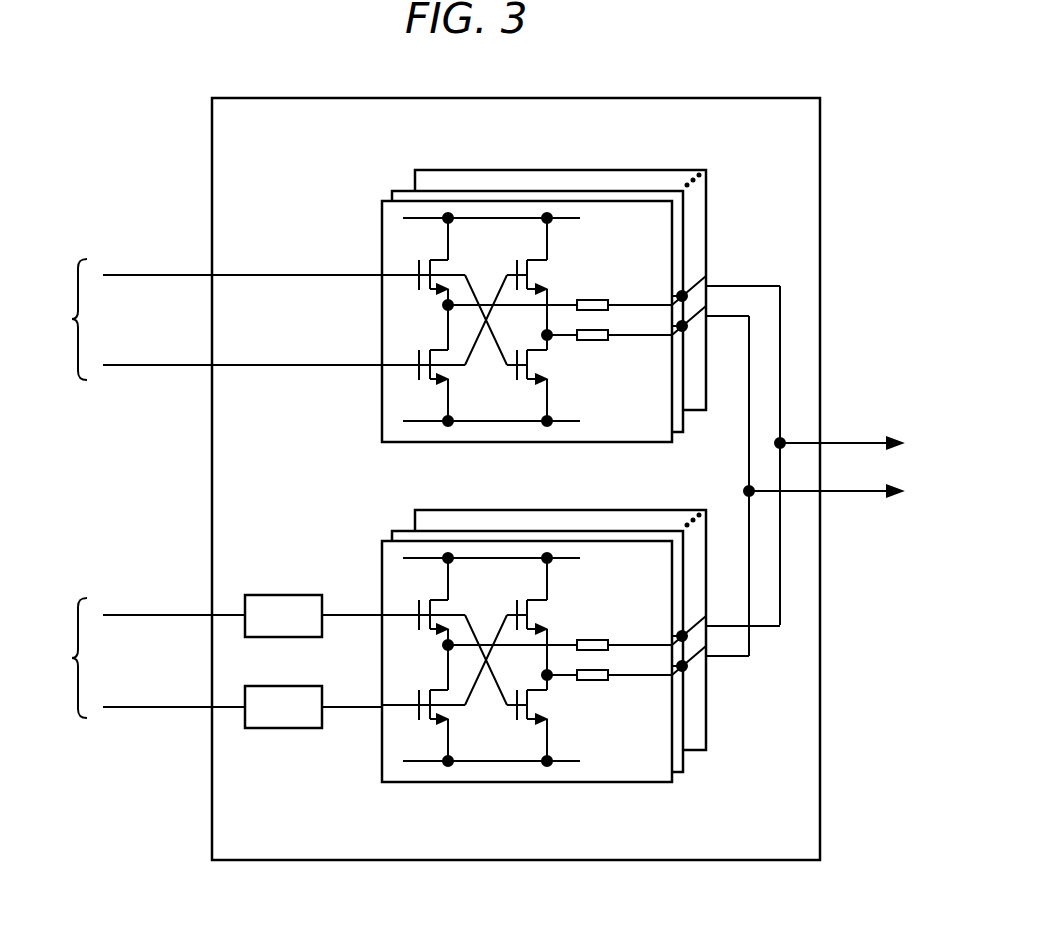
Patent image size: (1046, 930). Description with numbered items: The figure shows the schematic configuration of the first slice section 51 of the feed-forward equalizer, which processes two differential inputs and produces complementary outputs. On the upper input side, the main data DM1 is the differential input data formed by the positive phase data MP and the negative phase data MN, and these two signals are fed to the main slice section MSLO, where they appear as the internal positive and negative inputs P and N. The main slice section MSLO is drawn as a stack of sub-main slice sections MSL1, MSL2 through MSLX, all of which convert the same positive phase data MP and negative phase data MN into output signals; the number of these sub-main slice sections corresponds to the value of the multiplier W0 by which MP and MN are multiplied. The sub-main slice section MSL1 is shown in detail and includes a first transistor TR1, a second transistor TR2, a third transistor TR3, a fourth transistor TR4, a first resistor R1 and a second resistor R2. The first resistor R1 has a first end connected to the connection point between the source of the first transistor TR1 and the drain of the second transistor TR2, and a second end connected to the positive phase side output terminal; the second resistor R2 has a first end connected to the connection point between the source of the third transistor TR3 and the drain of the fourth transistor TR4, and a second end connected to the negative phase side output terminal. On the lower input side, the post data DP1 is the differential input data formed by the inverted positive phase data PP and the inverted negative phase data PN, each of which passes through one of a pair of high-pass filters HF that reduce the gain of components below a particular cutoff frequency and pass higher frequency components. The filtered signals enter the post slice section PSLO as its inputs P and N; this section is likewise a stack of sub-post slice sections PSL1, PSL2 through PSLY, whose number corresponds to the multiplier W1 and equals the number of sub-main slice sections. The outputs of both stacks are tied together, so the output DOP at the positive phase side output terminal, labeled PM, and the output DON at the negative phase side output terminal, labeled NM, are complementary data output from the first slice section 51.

The first slice section 51 is at (476, 97).
The main slice section MSLO is at (628, 158).
The sub-main slice section MSLX is at (706, 222).
The sub-main slice section MSL1 is at (635, 445).
The sub-main slice section MSL2 is at (678, 434).
The post slice section PSLO is at (510, 797).
The sub-post slice section PSLY is at (708, 720).
The sub-post slice section PSL1 is at (632, 784).
The sub-post slice section PSL2 is at (680, 777).
The first transistor TR1 is at (430, 257).
The second transistor TR2 is at (432, 385).
The third transistor TR3 is at (550, 272).
The fourth transistor TR4 is at (548, 365).
The first resistor R1 is at (594, 298).
The second resistor R2 is at (597, 342).
The positive phase data MP is at (157, 275).
The negative phase data MN is at (157, 365).
The main data DM1 is at (57, 319).
The positive input P is at (351, 429).
The negative input N is at (352, 519).
The multiplier W0 is at (555, 150).
The multiplier W1 is at (556, 490).
The high-pass filter HF is at (279, 595).
The inverted positive phase data PP is at (157, 614).
The inverted negative phase data PN is at (157, 706).
The post data DP1 is at (57, 658).
The output of the positive phase side output terminal DOP is at (833, 442).
The positive output signal PM is at (867, 425).
The output of the negative phase side output terminal DON is at (836, 494).
The negative output signal NM is at (869, 473).